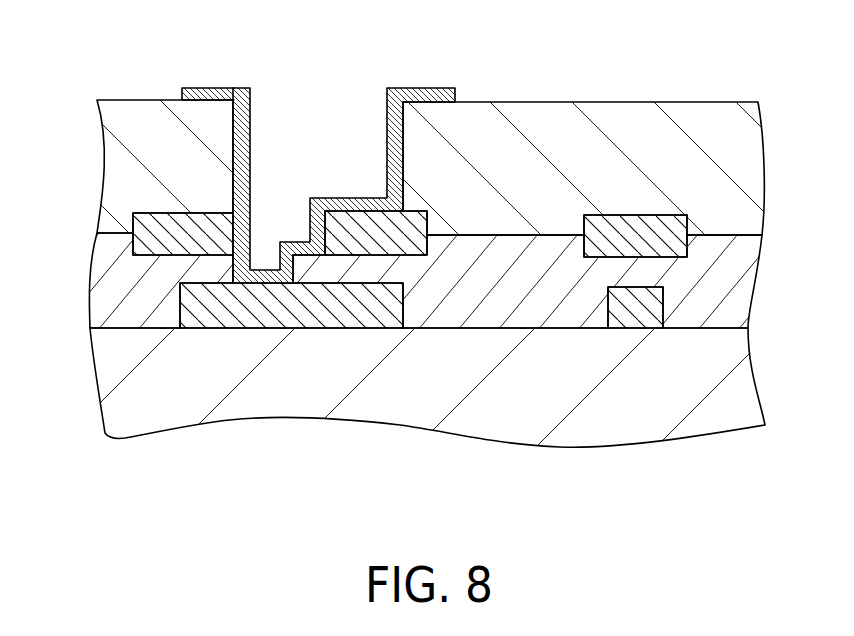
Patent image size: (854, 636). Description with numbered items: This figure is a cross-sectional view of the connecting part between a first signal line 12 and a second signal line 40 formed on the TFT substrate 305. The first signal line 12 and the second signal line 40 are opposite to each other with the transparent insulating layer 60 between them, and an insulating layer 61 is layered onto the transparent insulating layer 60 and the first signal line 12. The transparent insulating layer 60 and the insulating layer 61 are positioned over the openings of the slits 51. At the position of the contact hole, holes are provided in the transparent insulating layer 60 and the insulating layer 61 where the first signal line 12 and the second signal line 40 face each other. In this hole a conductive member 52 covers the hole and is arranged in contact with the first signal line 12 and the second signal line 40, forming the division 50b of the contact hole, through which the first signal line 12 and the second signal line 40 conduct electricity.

The first signal line 12 is at (155, 213).
The second signal line 40 is at (247, 318).
The division of the contact hole 50b is at (250, 130).
The slit 51 is at (428, 222).
The conductive member 52 is at (215, 88).
The transparent insulating layer 60 is at (103, 302).
The insulating layer 61 is at (743, 165).
The TFT substrate 305 is at (533, 423).